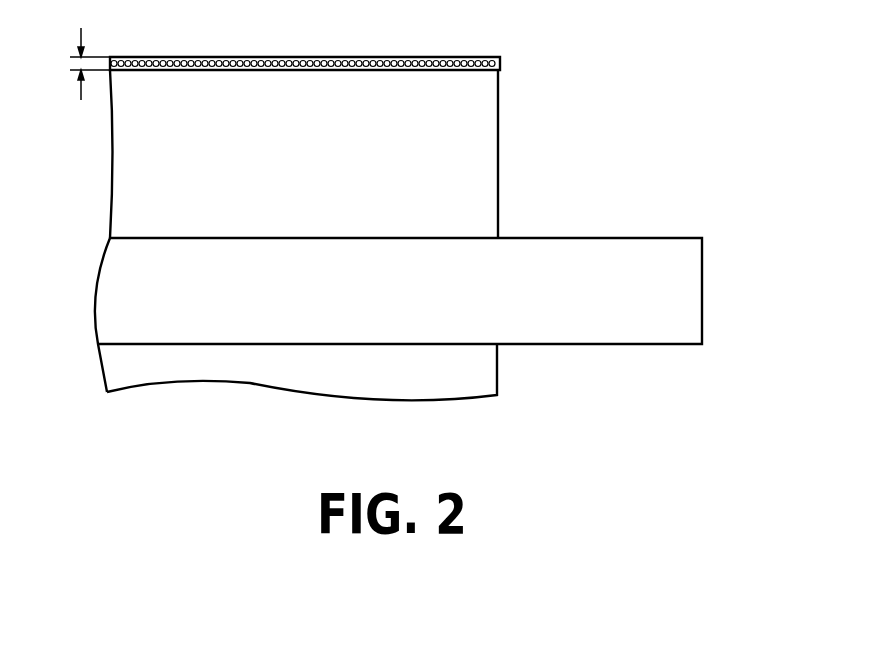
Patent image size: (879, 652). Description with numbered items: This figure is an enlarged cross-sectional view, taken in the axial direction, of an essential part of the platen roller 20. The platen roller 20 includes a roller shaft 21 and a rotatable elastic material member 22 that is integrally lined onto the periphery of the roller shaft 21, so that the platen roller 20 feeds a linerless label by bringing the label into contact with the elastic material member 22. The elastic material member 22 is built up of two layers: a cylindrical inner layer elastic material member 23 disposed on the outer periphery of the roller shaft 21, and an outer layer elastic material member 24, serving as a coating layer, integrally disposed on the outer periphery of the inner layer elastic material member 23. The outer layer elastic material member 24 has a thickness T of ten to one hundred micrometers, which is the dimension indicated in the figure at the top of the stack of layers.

The platen roller 20 is at (379, 211).
The roller shaft 21 is at (599, 334).
The elastic material member 22 is at (354, 142).
The inner layer elastic material member 23 is at (483, 131).
The outer layer elastic material member 24 is at (330, 66).